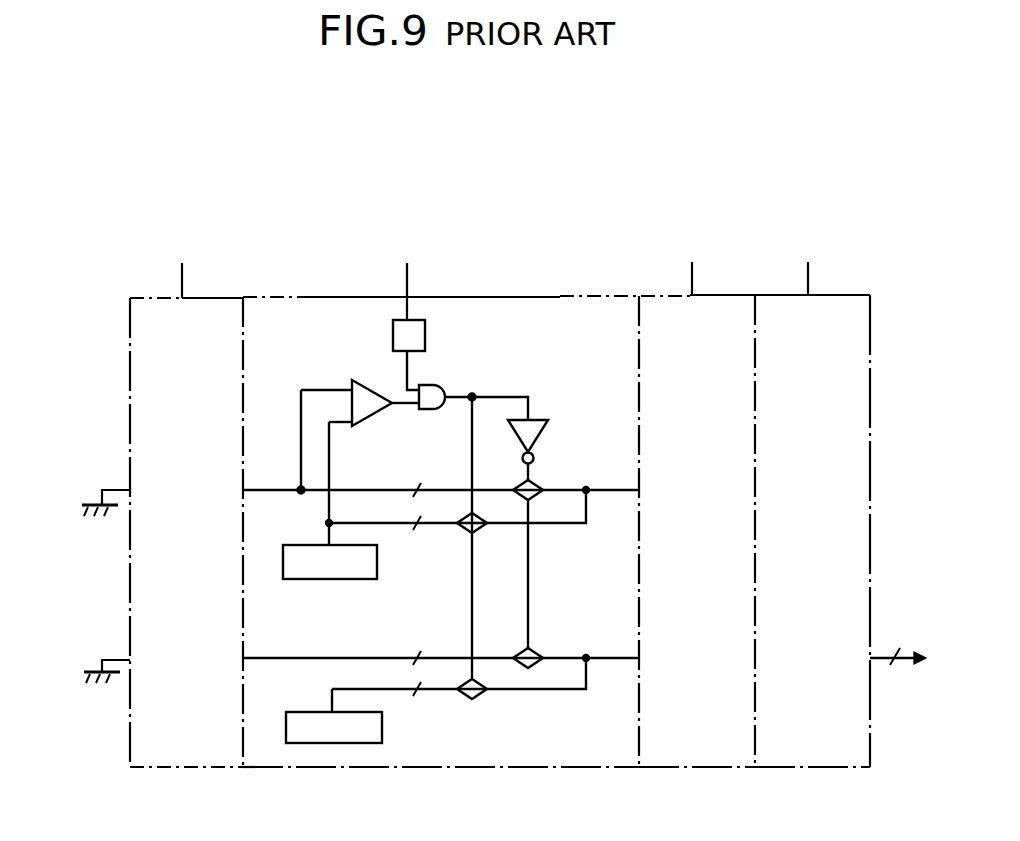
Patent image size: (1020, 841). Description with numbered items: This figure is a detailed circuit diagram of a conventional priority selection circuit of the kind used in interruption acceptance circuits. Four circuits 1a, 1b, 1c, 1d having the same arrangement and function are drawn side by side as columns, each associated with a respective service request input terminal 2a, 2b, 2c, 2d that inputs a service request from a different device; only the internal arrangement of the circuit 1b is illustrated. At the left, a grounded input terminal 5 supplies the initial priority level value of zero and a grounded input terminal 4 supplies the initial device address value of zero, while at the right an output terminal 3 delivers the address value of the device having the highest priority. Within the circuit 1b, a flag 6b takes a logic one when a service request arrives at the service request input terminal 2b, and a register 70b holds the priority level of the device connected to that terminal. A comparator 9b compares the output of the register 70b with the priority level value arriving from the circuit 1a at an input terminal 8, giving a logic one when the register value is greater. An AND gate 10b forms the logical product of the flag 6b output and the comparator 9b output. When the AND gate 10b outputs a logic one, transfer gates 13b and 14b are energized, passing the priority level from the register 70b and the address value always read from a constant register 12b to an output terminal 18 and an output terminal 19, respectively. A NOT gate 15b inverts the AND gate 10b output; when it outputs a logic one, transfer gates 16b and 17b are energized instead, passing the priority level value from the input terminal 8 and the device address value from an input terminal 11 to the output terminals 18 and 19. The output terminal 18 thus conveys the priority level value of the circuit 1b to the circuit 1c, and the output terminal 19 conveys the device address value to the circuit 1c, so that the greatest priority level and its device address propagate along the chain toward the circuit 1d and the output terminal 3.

The circuit 1a is at (213, 770).
The circuit 1b is at (362, 770).
The circuit 1c is at (687, 770).
The circuit 1d is at (820, 770).
The service request input terminal 2a is at (182, 285).
The service request input terminal 2b is at (407, 285).
The service request input terminal 2c is at (692, 283).
The service request input terminal 2d is at (808, 280).
The output terminal 3 is at (903, 665).
The input terminal 4 is at (128, 667).
The input terminal 5 is at (118, 486).
The flag 6b is at (426, 335).
The input terminal 8 is at (260, 494).
The comparator 9b is at (368, 378).
The AND gate 10b is at (436, 382).
The input terminal 11 is at (258, 662).
The constant register 12b is at (383, 724).
The transfer gate 13b is at (462, 532).
The transfer gate 14b is at (462, 698).
The NOT gate 15b is at (548, 425).
The transfer gate 16b is at (540, 482).
The transfer gate 17b is at (540, 652).
The output terminal 18 is at (612, 494).
The output terminal 19 is at (615, 662).
The register 70b is at (336, 581).